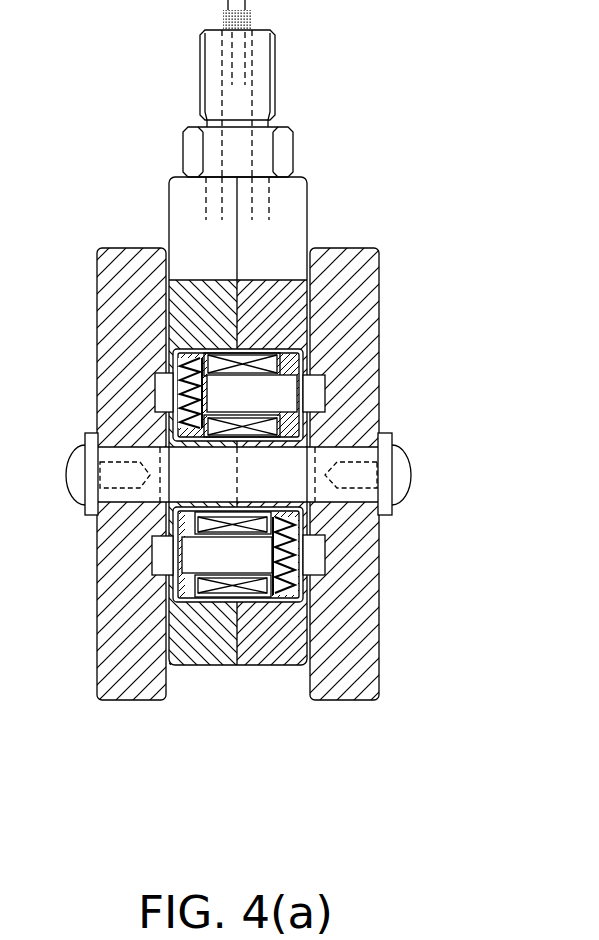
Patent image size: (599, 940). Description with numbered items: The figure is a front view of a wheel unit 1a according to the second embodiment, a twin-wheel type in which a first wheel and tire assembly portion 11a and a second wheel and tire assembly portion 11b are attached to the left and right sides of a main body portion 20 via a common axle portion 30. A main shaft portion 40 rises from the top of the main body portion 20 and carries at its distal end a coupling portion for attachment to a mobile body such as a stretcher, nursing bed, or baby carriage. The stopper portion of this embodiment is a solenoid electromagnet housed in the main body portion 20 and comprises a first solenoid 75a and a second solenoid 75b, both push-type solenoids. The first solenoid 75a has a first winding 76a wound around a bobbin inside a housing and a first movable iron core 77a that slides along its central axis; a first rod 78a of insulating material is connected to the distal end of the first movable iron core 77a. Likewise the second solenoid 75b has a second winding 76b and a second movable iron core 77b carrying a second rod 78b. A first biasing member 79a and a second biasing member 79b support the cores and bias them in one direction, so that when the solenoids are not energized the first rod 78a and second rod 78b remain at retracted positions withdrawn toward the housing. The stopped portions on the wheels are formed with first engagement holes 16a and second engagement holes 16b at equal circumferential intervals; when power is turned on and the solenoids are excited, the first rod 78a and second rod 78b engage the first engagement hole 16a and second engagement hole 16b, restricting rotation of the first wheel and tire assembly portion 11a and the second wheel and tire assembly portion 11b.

The wheel unit 1a is at (269, 397).
The main body portion 20 is at (320, 176).
The main shaft portion 40 is at (281, 60).
The common axle portion 30 is at (328, 465).
The first wheel and tire assembly portion 11a is at (120, 701).
The second wheel and tire assembly portion 11b is at (355, 701).
The first engagement hole 16a is at (150, 556).
The second engagement hole 16b is at (324, 393).
The first solenoid 75a is at (258, 605).
The second solenoid 75b is at (248, 375).
The first winding 76a is at (210, 605).
The second winding 76b is at (275, 357).
The first movable iron core 77a is at (300, 564).
The second movable iron core 77b is at (180, 393).
The first rod 78a is at (185, 605).
The second rod 78b is at (300, 350).
The first biasing member 79a is at (290, 605).
The second biasing member 79b is at (192, 350).